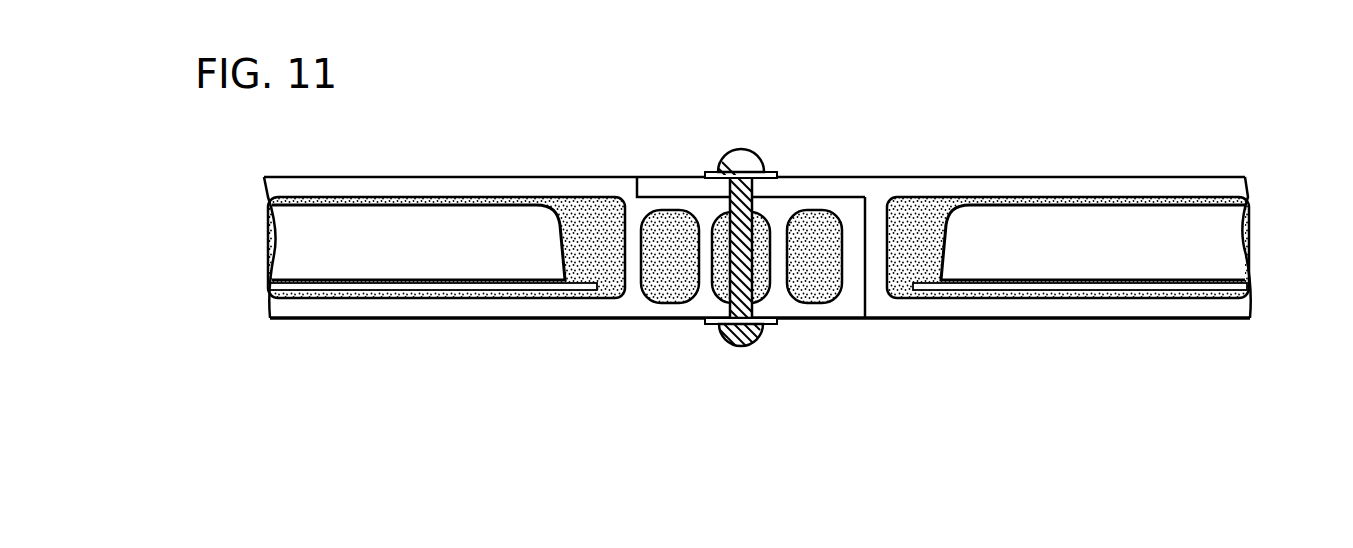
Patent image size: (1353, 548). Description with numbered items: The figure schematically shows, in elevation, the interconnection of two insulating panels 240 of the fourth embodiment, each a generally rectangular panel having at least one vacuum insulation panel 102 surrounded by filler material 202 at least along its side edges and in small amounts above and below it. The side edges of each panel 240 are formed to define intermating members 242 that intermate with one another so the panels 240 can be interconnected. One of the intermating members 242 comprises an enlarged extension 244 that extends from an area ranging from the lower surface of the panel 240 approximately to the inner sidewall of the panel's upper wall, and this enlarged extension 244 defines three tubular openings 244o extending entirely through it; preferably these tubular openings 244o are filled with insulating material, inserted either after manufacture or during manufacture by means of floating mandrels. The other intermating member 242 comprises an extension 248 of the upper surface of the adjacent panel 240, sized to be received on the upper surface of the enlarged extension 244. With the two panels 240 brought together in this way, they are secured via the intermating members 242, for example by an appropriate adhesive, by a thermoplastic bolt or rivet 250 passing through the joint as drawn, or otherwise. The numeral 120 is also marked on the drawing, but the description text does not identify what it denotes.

The insulating panel 240 is at (424, 166).
The filler material 202 is at (580, 212).
The vacuum insulation panel 102 is at (316, 259).
The skin return flange 120 is at (558, 243).
The intermating members 242 is at (674, 172).
The extension 248 is at (802, 190).
The tubular openings 244o is at (657, 292).
The enlarged extension 244 is at (811, 313).
The thermoplastic bolt or rivet 250 is at (748, 345).